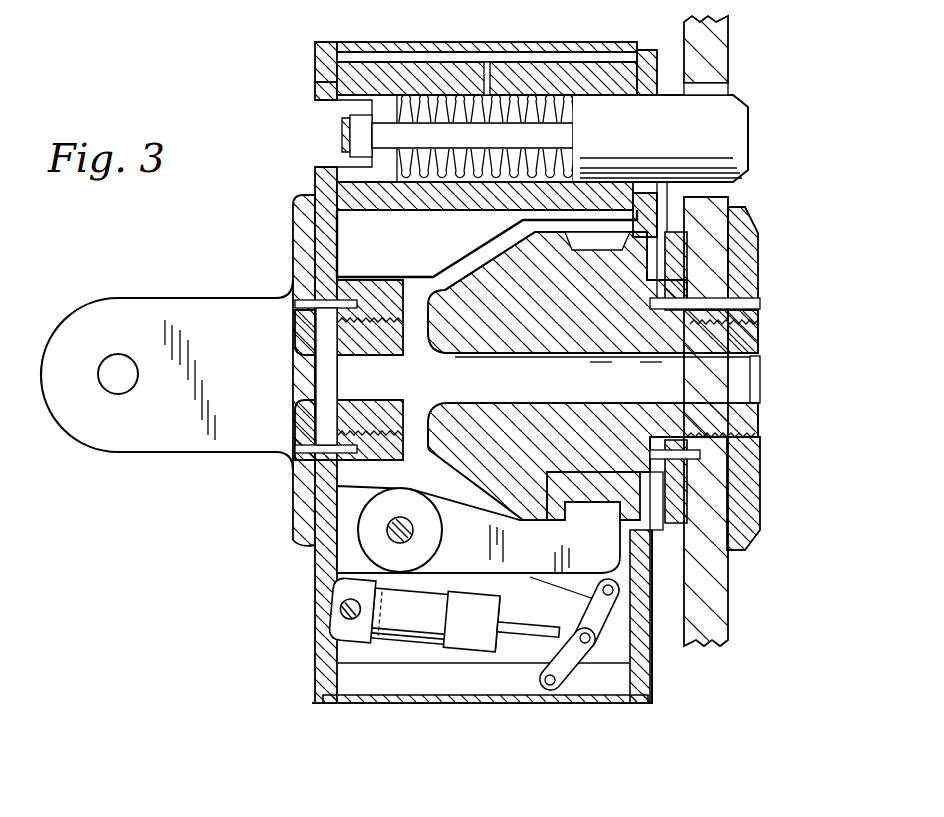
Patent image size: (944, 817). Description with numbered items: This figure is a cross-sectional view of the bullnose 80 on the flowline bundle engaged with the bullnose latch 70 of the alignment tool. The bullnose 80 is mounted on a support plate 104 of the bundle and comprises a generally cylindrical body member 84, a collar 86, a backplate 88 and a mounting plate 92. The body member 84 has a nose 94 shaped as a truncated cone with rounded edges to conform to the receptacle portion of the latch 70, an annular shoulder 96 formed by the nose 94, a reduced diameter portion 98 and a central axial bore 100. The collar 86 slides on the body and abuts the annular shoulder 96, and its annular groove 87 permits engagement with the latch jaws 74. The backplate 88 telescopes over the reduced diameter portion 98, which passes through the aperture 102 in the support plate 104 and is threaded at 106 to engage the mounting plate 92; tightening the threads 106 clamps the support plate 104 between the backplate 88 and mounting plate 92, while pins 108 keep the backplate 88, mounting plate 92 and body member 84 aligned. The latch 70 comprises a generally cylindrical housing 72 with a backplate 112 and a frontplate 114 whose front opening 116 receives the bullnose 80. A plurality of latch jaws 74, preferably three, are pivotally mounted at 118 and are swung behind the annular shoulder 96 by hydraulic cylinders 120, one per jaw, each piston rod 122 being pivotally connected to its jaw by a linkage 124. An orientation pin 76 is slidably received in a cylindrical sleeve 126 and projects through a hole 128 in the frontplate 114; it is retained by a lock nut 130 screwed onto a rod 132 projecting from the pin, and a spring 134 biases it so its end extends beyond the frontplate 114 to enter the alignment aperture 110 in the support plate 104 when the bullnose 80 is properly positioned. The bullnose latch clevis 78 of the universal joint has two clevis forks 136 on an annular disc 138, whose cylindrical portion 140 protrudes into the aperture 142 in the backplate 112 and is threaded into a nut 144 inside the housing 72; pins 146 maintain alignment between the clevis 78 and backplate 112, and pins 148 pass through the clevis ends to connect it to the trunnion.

The bullnose latch 70 is at (355, 245).
The housing 72 is at (383, 683).
The latch jaws 74 is at (538, 558).
The orientation pin 76 is at (688, 150).
The bullnose latch clevis 78 is at (140, 452).
The bullnose 80 is at (483, 447).
The body member 84 is at (753, 408).
The collar 86 is at (583, 490).
The annular groove 87 is at (607, 250).
The backplate 88 is at (680, 258).
The mounting plate 92 is at (752, 228).
The nose 94 is at (458, 343).
The annular shoulder 96 is at (522, 242).
The reduced diameter portion 98 is at (712, 345).
The central axial bore 100 is at (737, 377).
The aperture 102 is at (700, 482).
The support plate 104 is at (715, 60).
The threads 106 is at (743, 428).
The pins 108 is at (623, 353).
The alignment aperture 110 is at (727, 88).
The backplate 112 is at (315, 553).
The frontplate 114 is at (655, 680).
The front opening 116 is at (700, 560).
The pivot 118 is at (410, 530).
The hydraulic cylinders 120 is at (470, 655).
The piston rod 122 is at (530, 645).
The linkage 124 is at (625, 620).
The cylindrical sleeve 126 is at (560, 103).
The hole 128 is at (648, 97).
The lock nut 130 is at (343, 124).
The rod 132 is at (555, 135).
The spring 134 is at (428, 187).
The clevis forks 136 is at (150, 298).
The annular disc 138 is at (302, 200).
The cylindrical portion 140 is at (330, 345).
The aperture 142 is at (325, 418).
The nut 144 is at (380, 440).
The pins 146 is at (292, 303).
The pins 148 is at (105, 383).